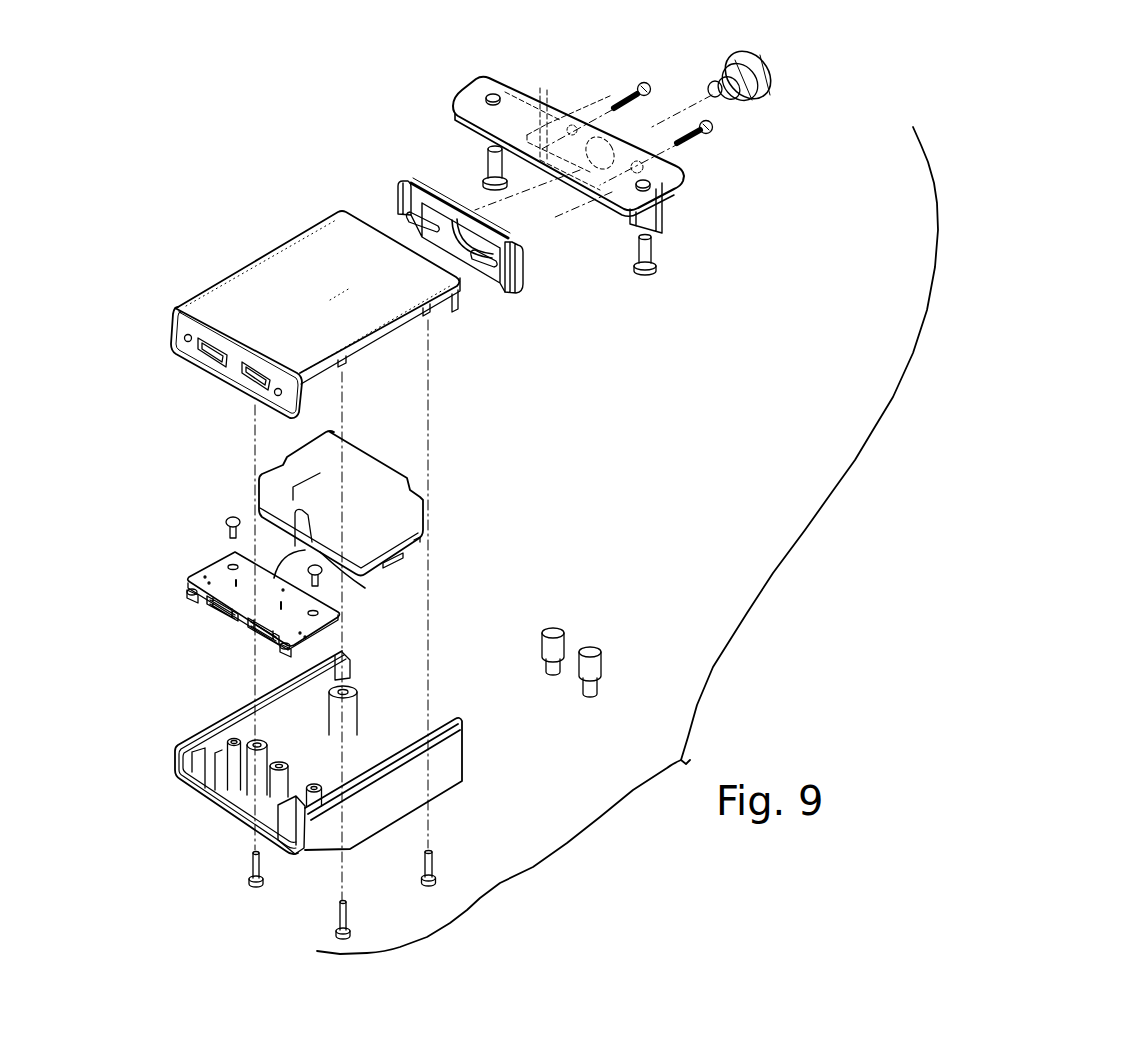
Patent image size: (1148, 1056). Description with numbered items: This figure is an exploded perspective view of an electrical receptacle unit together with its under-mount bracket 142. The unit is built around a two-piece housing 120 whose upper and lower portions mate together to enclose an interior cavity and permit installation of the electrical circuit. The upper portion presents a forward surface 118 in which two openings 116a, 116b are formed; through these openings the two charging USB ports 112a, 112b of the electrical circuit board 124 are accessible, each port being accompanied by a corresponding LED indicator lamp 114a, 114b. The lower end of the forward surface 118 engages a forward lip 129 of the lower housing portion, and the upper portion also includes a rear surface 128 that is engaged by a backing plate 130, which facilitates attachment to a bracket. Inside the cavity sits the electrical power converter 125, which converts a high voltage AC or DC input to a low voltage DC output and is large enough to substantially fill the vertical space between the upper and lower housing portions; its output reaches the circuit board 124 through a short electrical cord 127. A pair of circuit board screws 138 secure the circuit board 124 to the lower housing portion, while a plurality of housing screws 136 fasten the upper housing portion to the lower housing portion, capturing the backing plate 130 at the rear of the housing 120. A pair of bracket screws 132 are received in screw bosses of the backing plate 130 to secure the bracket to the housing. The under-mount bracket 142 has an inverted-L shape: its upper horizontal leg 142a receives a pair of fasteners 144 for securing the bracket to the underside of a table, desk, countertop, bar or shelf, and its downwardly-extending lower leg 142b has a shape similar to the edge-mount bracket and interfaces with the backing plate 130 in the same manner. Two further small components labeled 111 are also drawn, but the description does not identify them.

The pin 111 is at (543, 642).
The charging USB port 112a is at (217, 617).
The charging USB port 112b is at (252, 642).
The LED indicator lamp 114a is at (185, 597).
The LED indicator lamp 114b is at (281, 649).
The opening 116a is at (210, 362).
The opening 116b is at (256, 389).
The forward surface 118 is at (170, 348).
The two-piece housing 120 is at (237, 275).
The electrical circuit board 124 is at (232, 615).
The electrical power converter 125 is at (281, 537).
The short electrical cord 127 is at (358, 588).
The rear surface 128 is at (460, 303).
The forward lip 129 is at (168, 768).
The backing plate 130 is at (396, 182).
The bracket screw 132 is at (625, 89).
The housing screw 136 is at (243, 866).
The circuit board screw 138 is at (221, 522).
The under-mount bracket 142 is at (460, 84).
The upper horizontal leg 142a is at (527, 90).
The lower leg 142b is at (667, 213).
The fastener 144 is at (486, 149).